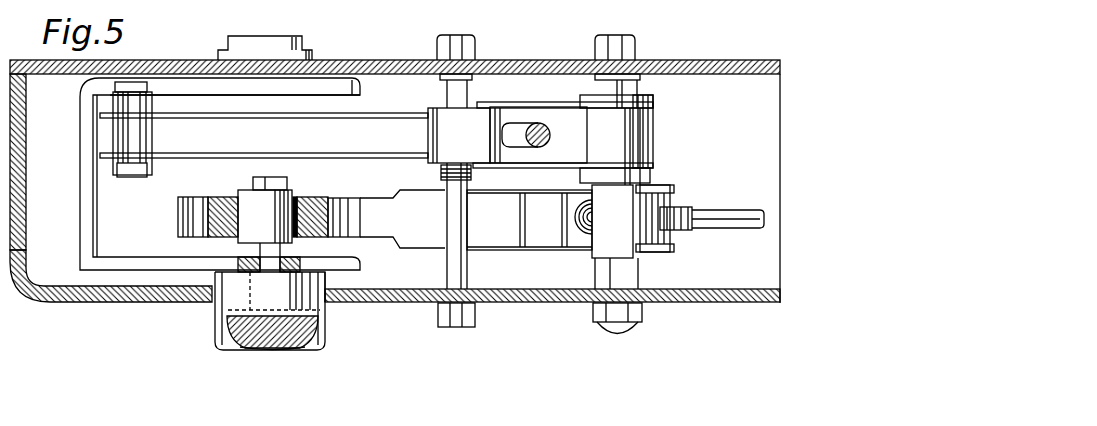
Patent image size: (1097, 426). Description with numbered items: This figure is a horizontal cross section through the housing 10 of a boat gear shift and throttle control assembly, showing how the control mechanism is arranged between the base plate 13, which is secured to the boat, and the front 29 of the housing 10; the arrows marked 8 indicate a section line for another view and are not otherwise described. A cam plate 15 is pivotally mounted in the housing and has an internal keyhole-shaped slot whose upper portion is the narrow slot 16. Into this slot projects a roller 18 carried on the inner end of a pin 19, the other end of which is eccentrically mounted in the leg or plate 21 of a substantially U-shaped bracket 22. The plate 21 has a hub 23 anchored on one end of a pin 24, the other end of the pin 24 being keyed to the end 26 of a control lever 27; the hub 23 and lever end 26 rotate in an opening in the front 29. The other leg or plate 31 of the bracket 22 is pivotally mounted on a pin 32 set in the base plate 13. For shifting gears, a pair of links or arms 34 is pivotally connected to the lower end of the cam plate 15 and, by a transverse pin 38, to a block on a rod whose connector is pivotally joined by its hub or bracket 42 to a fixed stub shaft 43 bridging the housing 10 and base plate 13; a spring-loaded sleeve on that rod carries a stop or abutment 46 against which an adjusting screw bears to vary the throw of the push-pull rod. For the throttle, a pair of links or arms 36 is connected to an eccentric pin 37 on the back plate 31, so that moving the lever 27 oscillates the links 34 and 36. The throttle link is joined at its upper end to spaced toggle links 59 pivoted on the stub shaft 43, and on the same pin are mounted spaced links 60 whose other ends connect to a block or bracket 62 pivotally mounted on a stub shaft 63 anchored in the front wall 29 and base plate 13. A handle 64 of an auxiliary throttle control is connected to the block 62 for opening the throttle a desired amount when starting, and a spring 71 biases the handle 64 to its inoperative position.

The section line 8- 8 is at (389, 176).
The housing 10 is at (112, 313).
The base plate 13 is at (722, 61).
The cam plate 15 is at (192, 189).
The slot 16 is at (312, 183).
The roller 18 is at (245, 197).
The pin 19 is at (265, 252).
The leg or plate 21 is at (173, 262).
The U-shaped bracket 22 is at (70, 190).
The hub 23 is at (328, 304).
The pin 24 is at (328, 325).
The end of control lever 26 is at (222, 333).
The control lever 27 is at (276, 360).
The front 29 is at (505, 304).
The leg or plate 31 is at (325, 87).
The pin 32 is at (266, 48).
The links or arms 34 is at (422, 190).
The links or arms 36 is at (288, 113).
The pin 37 is at (138, 177).
The transverse pin 38 is at (652, 252).
The hub or bracket 42 is at (622, 236).
The fixed stub shaft 43 is at (630, 88).
The stop or abutment 46 is at (567, 236).
The toggle links 59 is at (653, 100).
The links 60 is at (569, 108).
The block or bracket 62 is at (468, 146).
The stub shaft 63 is at (468, 268).
The handle 64 is at (535, 104).
The spring 71 is at (517, 191).